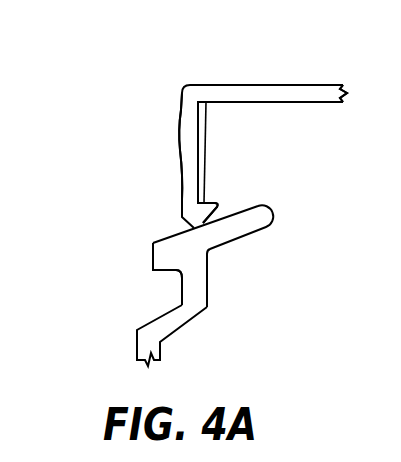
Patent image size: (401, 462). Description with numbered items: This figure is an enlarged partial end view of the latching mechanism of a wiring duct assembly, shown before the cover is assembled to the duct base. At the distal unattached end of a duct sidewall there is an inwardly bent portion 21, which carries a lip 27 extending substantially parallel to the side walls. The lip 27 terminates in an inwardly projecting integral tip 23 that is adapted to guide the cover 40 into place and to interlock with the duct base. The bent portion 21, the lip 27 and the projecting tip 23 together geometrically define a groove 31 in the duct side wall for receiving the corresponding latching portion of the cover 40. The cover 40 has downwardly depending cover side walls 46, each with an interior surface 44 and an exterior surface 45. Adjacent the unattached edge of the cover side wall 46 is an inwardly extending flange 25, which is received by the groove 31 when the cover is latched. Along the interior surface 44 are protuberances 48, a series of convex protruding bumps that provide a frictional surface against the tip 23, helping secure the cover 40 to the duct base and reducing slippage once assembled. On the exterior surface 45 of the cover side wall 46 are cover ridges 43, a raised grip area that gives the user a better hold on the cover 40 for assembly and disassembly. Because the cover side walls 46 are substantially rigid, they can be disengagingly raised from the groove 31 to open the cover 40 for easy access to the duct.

The inwardly bent portion 21 is at (185, 323).
The inwardly projecting integral tip 23 is at (182, 258).
The inwardly extending flange 25 is at (206, 196).
The lip 27 is at (207, 270).
The groove 31 is at (170, 283).
The cover 40 is at (283, 86).
The cover ridges 43 is at (181, 127).
The interior surface 44 is at (324, 104).
The exterior surface 45 is at (213, 85).
The cover side walls 46 is at (178, 147).
The protuberances 48 is at (207, 132).